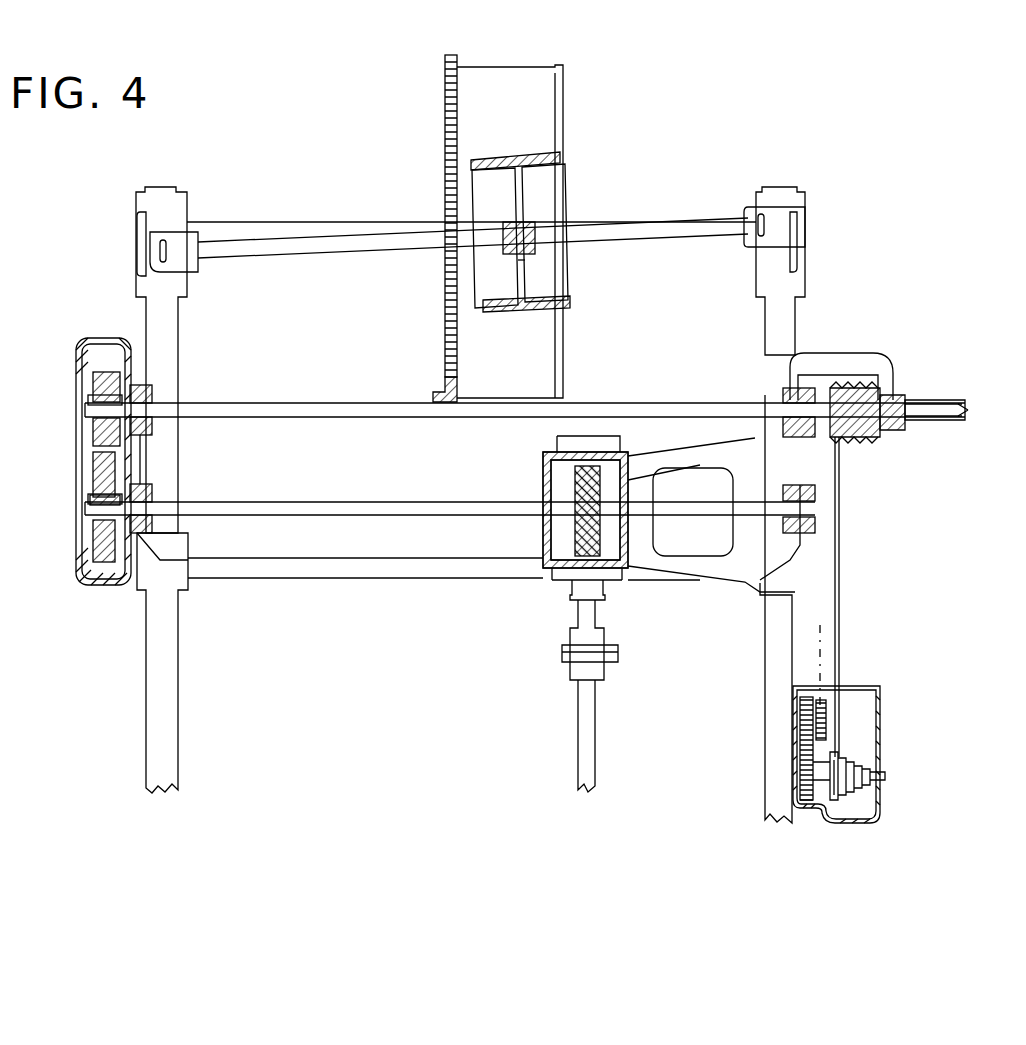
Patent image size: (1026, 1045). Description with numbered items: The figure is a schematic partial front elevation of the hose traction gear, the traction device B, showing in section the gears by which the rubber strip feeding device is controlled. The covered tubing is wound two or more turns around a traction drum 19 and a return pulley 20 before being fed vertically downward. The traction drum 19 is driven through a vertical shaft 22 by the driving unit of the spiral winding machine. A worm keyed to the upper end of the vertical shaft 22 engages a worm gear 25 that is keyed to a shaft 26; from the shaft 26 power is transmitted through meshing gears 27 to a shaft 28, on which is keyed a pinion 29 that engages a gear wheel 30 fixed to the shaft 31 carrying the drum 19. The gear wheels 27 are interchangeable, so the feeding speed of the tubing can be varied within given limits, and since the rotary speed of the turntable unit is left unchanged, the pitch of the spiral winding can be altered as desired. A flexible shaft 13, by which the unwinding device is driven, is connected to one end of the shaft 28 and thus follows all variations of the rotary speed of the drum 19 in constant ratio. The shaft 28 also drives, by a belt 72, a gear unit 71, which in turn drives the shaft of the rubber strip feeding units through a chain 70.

The flexible shaft 13 is at (962, 410).
The traction drum 19 is at (545, 112).
The return pulley 20 is at (540, 306).
The vertical shaft 22 is at (590, 754).
The worm gear 25 is at (545, 548).
The shaft 26 is at (323, 502).
The meshing gears 27 is at (97, 470).
The shaft 28 is at (323, 404).
The pinion 29 is at (455, 438).
The gear wheel 30 is at (446, 102).
The shaft 31 is at (340, 228).
The chain 70 is at (824, 660).
The gear unit 71 is at (882, 735).
The belt 72 is at (841, 575).
The traction device B is at (822, 325).